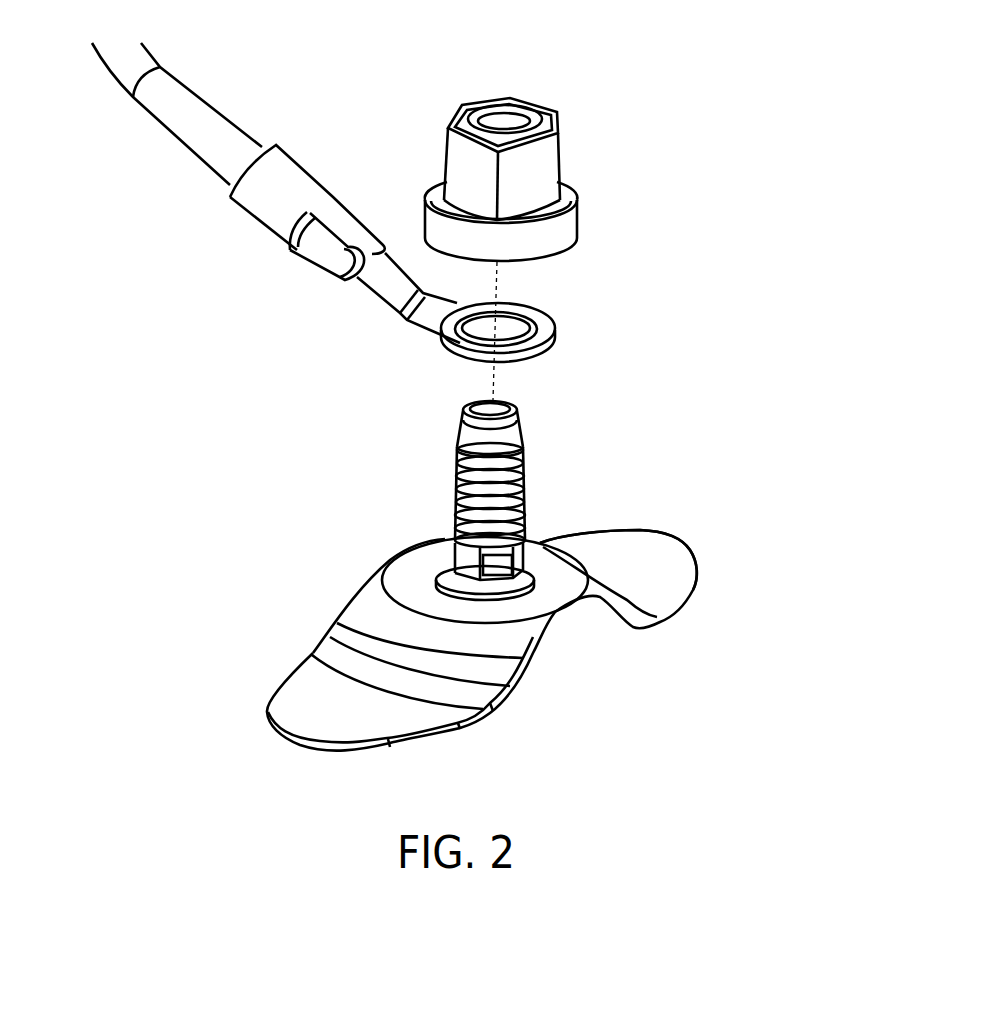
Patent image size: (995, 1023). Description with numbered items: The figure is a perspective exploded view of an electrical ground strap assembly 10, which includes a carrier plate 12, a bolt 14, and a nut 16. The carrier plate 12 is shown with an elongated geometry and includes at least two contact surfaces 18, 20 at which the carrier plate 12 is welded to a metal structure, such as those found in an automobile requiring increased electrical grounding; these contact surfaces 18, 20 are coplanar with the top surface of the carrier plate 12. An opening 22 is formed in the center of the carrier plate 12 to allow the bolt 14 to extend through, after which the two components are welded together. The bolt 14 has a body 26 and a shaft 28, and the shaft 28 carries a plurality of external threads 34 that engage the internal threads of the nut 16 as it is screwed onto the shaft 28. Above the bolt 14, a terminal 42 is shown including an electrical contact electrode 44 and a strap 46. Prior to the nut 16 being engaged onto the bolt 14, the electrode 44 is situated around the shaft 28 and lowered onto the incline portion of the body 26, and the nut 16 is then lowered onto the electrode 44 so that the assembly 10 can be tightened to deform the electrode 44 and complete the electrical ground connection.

The electrical ground strap assembly 10 is at (306, 439).
The carrier plate 12 is at (683, 583).
The bolt 14 is at (518, 407).
The nut 16 is at (565, 115).
The contact surface 18 is at (280, 708).
The contact surface 20 is at (653, 560).
The opening 22 is at (437, 572).
The body 26 is at (527, 563).
The shaft 28 is at (523, 445).
The external threads 34 is at (462, 480).
The terminal 42 is at (341, 122).
The electrical contact electrode 44 is at (552, 308).
The strap 46 is at (196, 97).